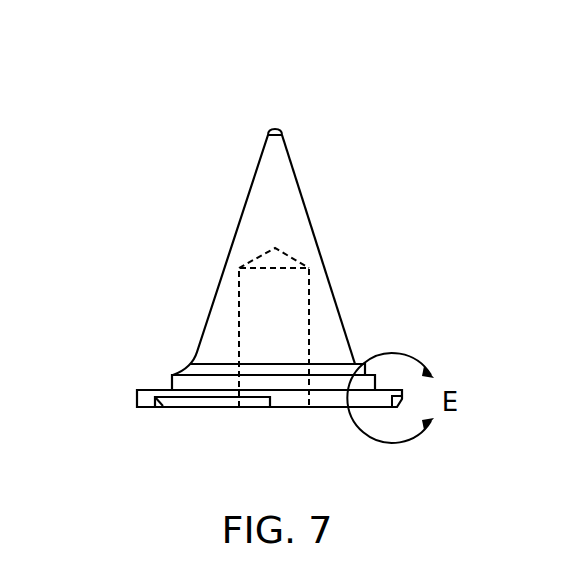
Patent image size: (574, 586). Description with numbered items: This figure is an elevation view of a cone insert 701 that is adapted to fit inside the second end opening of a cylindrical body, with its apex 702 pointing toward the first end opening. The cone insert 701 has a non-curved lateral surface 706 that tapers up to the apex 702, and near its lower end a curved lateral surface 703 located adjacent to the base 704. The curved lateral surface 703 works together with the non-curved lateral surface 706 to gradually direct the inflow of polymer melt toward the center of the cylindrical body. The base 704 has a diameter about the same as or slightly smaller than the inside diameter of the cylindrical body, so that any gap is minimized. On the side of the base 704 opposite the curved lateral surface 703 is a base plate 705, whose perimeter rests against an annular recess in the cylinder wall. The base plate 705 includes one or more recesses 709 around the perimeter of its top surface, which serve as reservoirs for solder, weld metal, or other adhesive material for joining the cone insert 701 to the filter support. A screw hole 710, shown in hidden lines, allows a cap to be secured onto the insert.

The cone insert 701 is at (377, 140).
The apex 702 is at (273, 127).
The curved lateral surface 703 is at (353, 364).
The base 704 is at (172, 383).
The base plate 705 is at (137, 398).
The non-curved lateral surface 706 is at (322, 255).
The recesses 709 is at (198, 402).
The screw hole 710 is at (287, 372).